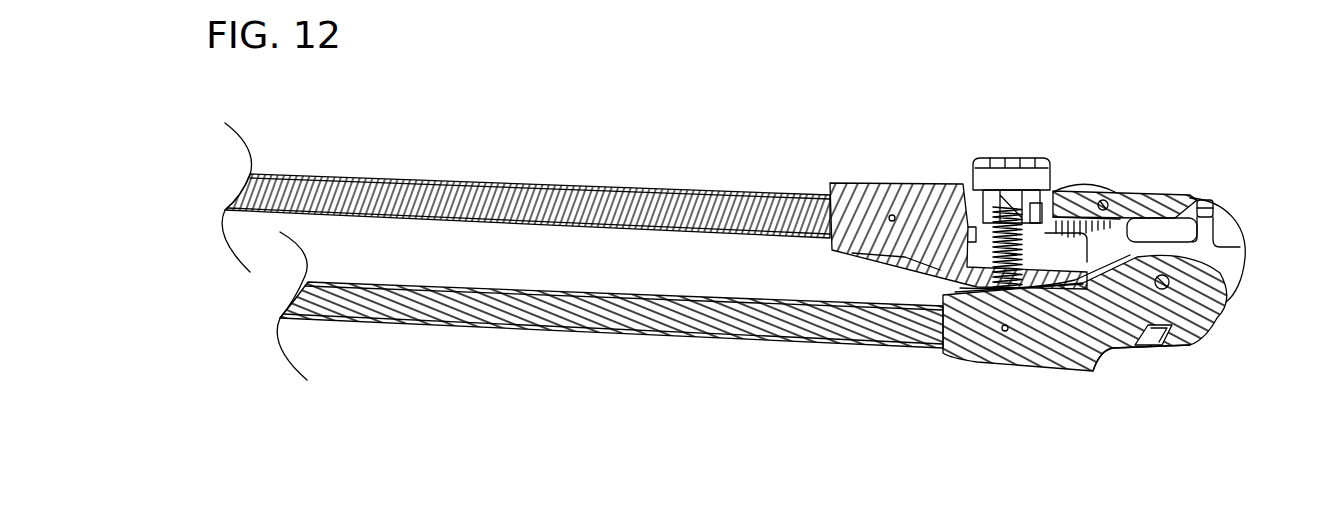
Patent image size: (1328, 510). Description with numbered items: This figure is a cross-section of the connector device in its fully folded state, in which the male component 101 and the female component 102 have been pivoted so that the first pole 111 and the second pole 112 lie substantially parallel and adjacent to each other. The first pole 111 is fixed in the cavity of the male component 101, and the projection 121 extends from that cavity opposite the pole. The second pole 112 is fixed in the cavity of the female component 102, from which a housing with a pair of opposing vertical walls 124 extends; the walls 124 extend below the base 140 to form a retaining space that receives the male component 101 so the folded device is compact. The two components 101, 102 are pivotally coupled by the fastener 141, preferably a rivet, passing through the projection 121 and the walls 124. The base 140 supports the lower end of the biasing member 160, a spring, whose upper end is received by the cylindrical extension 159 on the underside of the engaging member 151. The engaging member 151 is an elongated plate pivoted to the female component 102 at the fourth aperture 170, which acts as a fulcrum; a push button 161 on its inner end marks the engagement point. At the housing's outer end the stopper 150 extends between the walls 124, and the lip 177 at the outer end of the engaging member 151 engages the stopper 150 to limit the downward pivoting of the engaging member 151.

The male component 101 is at (1203, 313).
The female component 102 is at (935, 205).
The first pole 111 is at (652, 323).
The second pole 112 is at (708, 193).
The projection 121 is at (1188, 320).
The walls 124 is at (1233, 233).
The base 140 is at (1058, 293).
The fastener 141 is at (1180, 283).
The stopper 150 is at (1215, 218).
The engaging member 151 is at (1152, 208).
The cylindrical extension 159 is at (1038, 217).
The biasing member 160 is at (983, 245).
The push button 161 is at (993, 163).
The fourth aperture 170 is at (1103, 203).
The lip 177 is at (1203, 200).